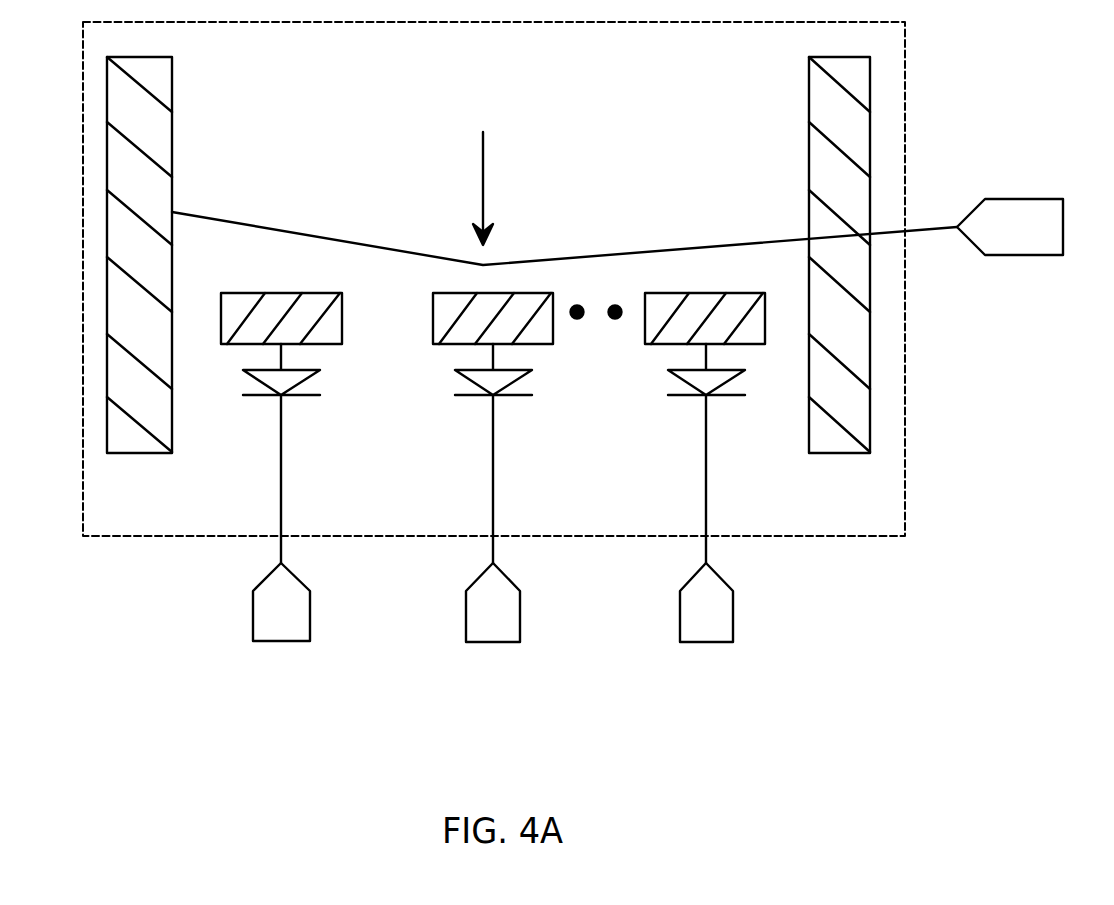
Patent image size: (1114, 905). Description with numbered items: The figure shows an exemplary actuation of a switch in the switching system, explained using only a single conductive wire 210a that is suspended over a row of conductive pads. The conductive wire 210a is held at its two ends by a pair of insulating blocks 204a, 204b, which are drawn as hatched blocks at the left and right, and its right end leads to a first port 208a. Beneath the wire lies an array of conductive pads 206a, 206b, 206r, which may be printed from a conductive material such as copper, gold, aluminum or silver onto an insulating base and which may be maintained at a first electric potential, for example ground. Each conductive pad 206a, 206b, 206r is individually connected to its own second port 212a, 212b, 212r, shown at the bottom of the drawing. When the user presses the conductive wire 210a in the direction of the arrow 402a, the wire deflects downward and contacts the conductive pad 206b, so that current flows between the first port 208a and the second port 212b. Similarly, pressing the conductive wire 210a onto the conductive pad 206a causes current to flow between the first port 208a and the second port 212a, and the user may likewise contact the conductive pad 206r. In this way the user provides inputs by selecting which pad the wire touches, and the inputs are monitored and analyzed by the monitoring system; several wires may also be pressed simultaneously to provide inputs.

The insulating block 204a is at (172, 118).
The insulating block 204b is at (809, 105).
The conductive wire 210a is at (270, 228).
The arrow 402a is at (483, 165).
The conductive pad 206a is at (237, 344).
The conductive pad 206b is at (450, 344).
The conductive pad 206r is at (660, 344).
The first port 208a is at (1020, 255).
The second port 212a is at (253, 615).
The second port 212b is at (466, 617).
The second port 212r is at (680, 622).